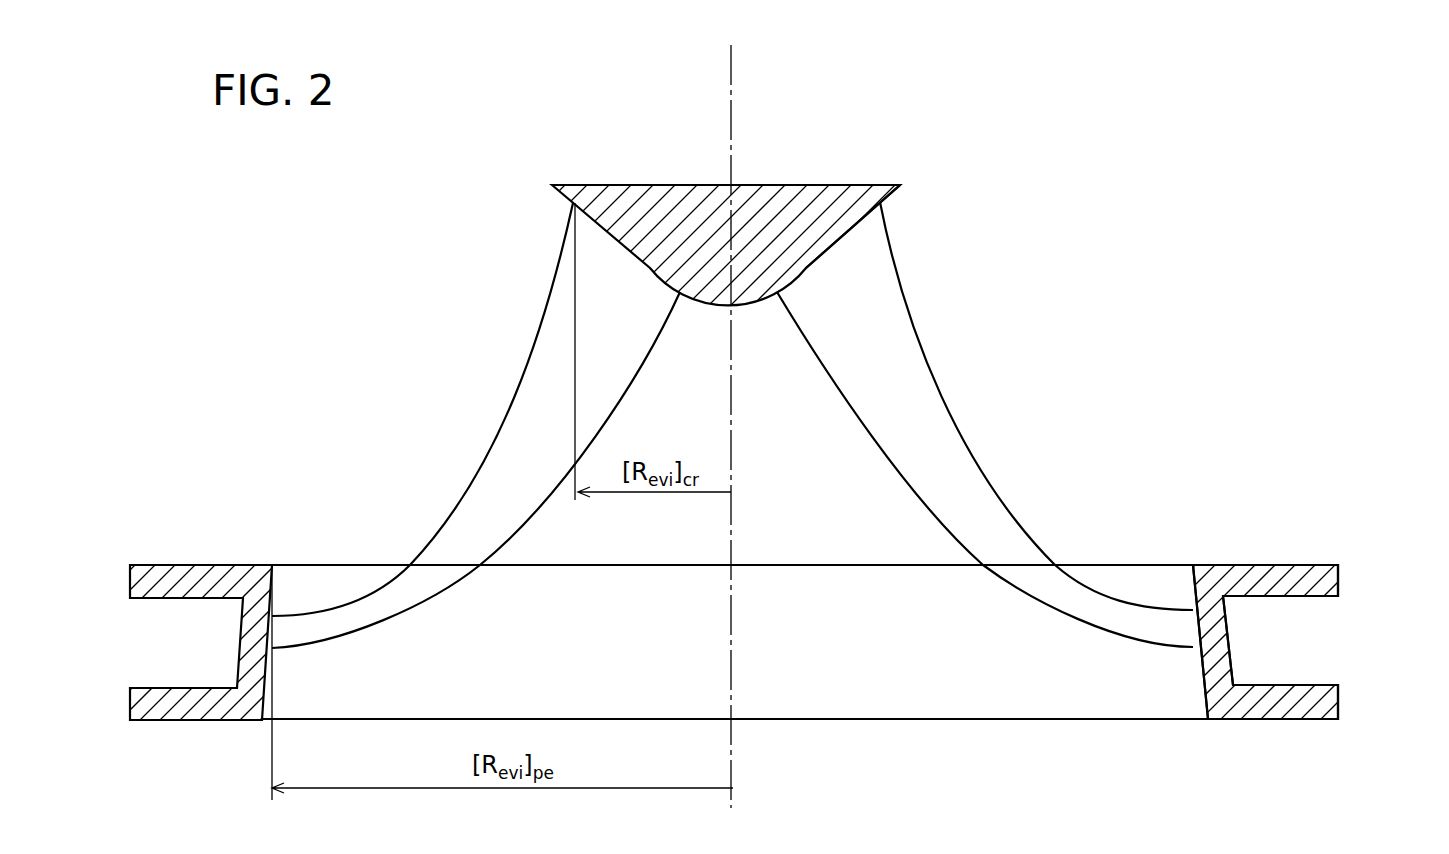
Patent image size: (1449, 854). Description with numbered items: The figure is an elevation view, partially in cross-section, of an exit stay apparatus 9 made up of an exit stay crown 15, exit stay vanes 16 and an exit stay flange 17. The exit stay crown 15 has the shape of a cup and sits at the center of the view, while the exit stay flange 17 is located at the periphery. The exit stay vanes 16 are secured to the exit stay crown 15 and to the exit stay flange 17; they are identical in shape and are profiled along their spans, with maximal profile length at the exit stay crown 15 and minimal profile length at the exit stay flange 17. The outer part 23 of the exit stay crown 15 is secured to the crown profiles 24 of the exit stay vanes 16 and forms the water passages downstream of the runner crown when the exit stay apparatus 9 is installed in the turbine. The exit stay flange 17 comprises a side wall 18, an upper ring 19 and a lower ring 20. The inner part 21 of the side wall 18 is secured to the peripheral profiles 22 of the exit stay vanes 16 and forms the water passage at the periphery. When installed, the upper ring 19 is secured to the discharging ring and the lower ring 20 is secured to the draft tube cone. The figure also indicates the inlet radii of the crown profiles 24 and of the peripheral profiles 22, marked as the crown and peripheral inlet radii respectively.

The exit stay apparatus 9 is at (794, 474).
The exit stay crown 15 is at (645, 253).
The exit stay vanes 16 is at (881, 333).
The exit stay flange 17 is at (1296, 625).
The side wall 18 is at (1210, 677).
The upper ring 19 is at (1328, 577).
The lower ring 20 is at (1318, 699).
The inner part of the side wall 21 is at (1181, 577).
The peripheral profiles 22 is at (1187, 627).
The outer part of exit stay crown 23 is at (908, 191).
The crown profiles 24 is at (851, 245).